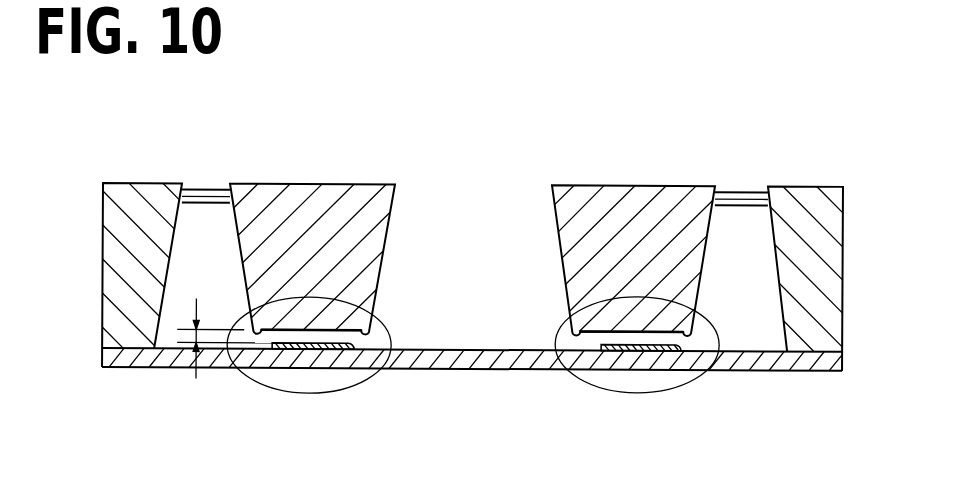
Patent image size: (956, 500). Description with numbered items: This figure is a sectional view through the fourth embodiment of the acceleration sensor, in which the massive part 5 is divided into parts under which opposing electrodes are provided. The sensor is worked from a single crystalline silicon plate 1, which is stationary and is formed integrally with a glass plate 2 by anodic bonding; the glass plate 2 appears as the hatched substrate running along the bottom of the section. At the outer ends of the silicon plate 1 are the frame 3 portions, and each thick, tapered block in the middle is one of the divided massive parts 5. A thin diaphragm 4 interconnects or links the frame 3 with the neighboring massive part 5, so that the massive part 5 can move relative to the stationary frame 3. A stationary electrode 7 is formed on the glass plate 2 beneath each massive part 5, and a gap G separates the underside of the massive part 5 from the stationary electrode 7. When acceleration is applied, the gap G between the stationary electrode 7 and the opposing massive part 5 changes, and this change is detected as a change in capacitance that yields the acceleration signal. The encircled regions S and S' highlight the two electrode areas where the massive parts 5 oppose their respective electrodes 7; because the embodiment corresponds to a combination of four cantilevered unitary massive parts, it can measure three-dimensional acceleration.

The single crystalline silicon plate 1 is at (132, 180).
The glass plate 2 is at (827, 365).
The frame 3 is at (798, 182).
The diaphragm 4 is at (197, 182).
The massive part 5 is at (316, 182).
The stationary electrode 7 is at (352, 349).
The gap G is at (207, 335).
The joint region S is at (309, 383).
The joint region S' is at (637, 383).